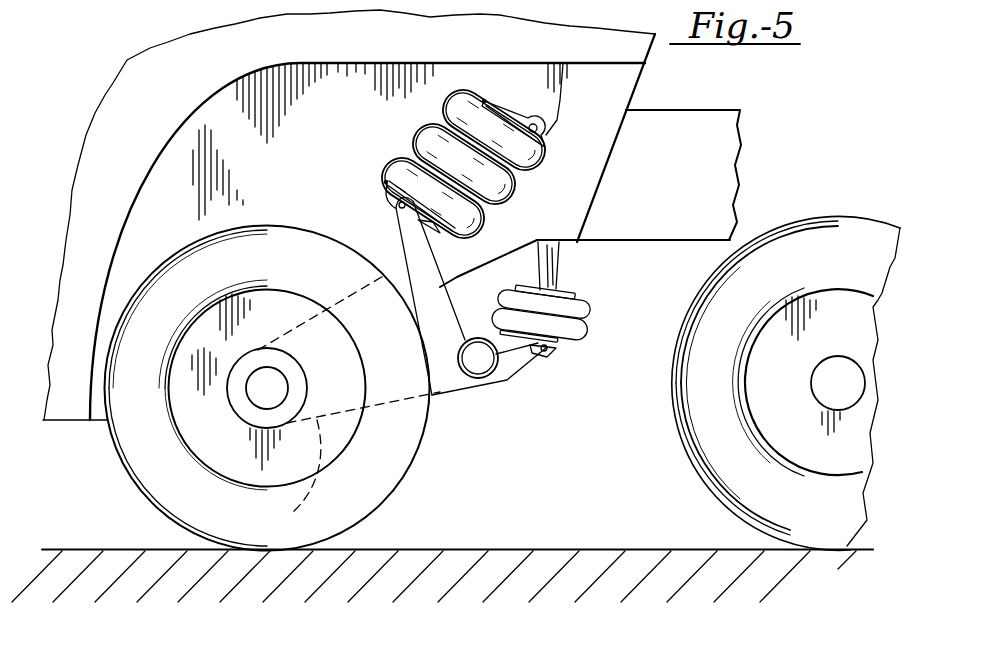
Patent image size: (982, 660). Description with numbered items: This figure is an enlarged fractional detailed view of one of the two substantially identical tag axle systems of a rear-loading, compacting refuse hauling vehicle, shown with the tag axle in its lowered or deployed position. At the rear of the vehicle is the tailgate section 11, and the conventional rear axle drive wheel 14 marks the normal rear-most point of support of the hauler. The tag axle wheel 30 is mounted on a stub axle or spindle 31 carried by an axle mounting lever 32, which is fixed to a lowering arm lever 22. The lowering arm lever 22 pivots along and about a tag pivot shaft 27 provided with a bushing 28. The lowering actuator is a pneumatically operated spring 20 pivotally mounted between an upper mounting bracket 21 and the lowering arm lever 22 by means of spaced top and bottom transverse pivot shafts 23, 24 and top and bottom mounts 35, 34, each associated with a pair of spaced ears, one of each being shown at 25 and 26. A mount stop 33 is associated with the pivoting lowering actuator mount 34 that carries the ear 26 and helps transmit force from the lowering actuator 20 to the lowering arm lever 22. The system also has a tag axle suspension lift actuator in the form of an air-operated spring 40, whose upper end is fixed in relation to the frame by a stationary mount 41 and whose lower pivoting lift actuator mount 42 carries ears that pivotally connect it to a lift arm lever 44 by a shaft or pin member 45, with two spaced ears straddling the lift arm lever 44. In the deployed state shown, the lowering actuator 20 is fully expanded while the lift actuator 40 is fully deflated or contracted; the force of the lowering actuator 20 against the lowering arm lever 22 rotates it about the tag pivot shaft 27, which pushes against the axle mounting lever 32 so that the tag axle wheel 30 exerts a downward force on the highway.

The tailgate section 11 is at (130, 63).
The wheel 14 is at (710, 488).
The pneumatically operated spring 20 is at (423, 128).
The upper mounting bracket 21 is at (563, 80).
The lowering arm lever 22 is at (462, 280).
The top transverse pivot shaft 23 is at (540, 131).
The bottom transverse pivot shaft 24 is at (401, 209).
The ear 25 is at (515, 108).
The ear 26 is at (392, 198).
The tag pivot shaft 27 is at (480, 374).
The bushing 28 is at (436, 395).
The tag axle wheel 30 is at (140, 493).
The stub axle or spindle 31 is at (262, 389).
The axle mounting lever 32 is at (313, 493).
The mount stop 33 is at (440, 233).
The bottom mount 34 is at (386, 181).
The top mount 35 is at (484, 101).
The air-operated spring 40 is at (590, 313).
The stationary mount 41 is at (562, 266).
The lower pivoting lift actuator mount 42 is at (563, 354).
The lift arm lever 44 is at (510, 384).
The shaft or pin member 45 is at (546, 354).